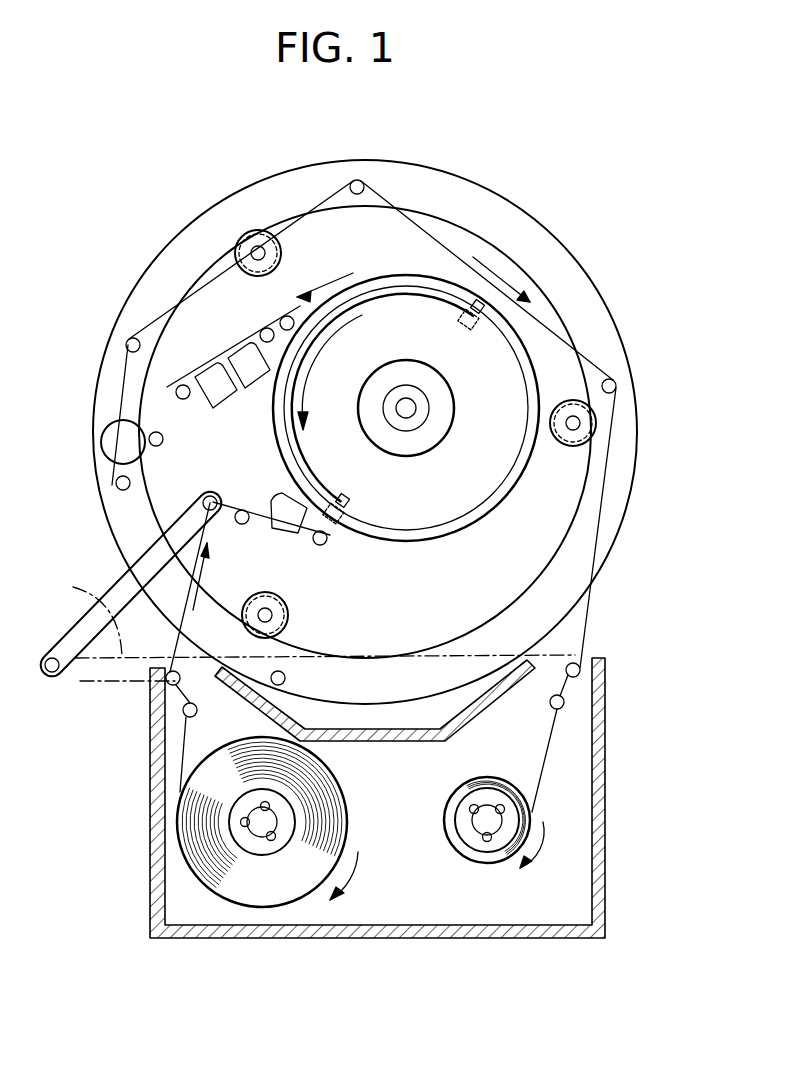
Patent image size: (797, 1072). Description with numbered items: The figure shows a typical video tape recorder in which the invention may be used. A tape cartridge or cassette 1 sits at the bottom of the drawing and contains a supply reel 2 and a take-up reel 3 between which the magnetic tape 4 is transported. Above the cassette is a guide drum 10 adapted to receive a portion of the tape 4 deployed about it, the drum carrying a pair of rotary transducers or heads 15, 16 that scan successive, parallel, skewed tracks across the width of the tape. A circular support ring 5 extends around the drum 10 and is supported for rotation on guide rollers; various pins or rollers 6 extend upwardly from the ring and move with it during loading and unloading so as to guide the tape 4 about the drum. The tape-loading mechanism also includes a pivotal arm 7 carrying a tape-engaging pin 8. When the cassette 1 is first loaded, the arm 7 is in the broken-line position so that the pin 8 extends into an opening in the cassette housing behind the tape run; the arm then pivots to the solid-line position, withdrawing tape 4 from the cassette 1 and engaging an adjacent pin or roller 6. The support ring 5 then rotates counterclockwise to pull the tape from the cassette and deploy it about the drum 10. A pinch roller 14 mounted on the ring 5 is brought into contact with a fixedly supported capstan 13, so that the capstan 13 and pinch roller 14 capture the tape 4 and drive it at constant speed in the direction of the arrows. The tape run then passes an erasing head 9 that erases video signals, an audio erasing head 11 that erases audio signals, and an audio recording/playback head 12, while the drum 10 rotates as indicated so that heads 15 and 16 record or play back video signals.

The tape cartridge 1 is at (605, 697).
The supply reel 2 is at (260, 848).
The take-up reel 3 is at (481, 843).
The magnetic tape 4 is at (433, 235).
The circular support ring 5 is at (213, 217).
The pins or rollers 6 is at (352, 182).
The pivotal arm 7 is at (118, 593).
The tape-engaging pin 8 is at (213, 498).
The erasing head 9 is at (283, 527).
The guide drum 10 is at (519, 470).
The audio erasing head 11 is at (243, 346).
The audio recording/playback head 12 is at (210, 368).
The capstan 13 is at (164, 439).
The pinch roller 14 is at (112, 438).
The rotary transducer or head 15 is at (347, 513).
The rotary transducer or head 16 is at (492, 312).